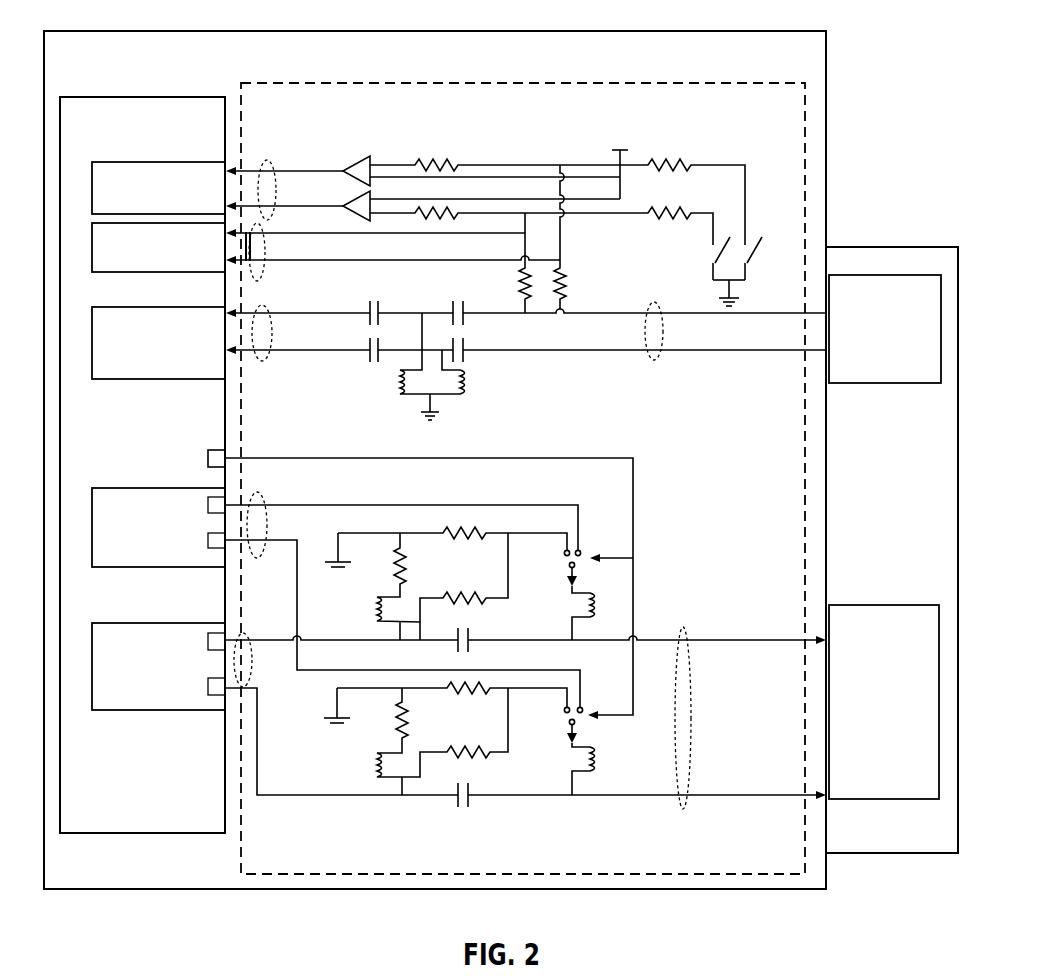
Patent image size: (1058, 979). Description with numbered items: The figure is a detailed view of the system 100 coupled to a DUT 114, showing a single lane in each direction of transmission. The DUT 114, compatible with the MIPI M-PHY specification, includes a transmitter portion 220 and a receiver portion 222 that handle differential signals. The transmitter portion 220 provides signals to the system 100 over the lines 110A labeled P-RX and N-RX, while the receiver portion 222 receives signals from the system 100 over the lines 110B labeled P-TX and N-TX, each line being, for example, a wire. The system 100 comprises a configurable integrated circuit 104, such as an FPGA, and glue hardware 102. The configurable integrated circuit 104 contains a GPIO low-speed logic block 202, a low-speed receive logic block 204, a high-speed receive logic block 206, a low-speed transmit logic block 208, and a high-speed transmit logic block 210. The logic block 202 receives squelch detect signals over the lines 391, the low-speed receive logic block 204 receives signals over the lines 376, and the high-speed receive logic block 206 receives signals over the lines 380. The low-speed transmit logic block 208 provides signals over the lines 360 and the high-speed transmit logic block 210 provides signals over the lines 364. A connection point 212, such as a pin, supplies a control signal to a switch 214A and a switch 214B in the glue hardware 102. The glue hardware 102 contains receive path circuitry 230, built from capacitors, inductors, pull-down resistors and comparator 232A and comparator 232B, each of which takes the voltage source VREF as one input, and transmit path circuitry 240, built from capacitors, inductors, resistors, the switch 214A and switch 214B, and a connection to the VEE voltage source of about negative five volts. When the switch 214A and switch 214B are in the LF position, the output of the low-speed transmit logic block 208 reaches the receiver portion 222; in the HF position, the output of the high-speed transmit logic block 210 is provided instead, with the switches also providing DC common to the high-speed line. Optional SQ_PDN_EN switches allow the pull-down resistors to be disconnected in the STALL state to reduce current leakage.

The system 100 is at (113, 30).
The glue hardware 102 is at (312, 82).
The configurable integrated circuit 104 is at (128, 96).
The lines 110A is at (654, 362).
The lines 110B is at (684, 627).
The DUT 114 is at (913, 840).
The general-purpose input/output logic block 202 is at (160, 161).
The low-speed receive logic block 204 is at (130, 273).
The high-speed receive logic block 206 is at (130, 380).
The low-speed transmit logic block 208 is at (158, 568).
The high-speed transmit logic block 210 is at (158, 711).
The connection point 212 is at (208, 455).
The switch 214A is at (594, 528).
The switch 214B is at (594, 695).
The transmitter portion 220 is at (905, 377).
The receiver portion 222 is at (905, 768).
The receive path circuitry 230 is at (723, 138).
The comparator 232A is at (362, 158).
The comparator 232B is at (360, 220).
The transmit path circuitry 240 is at (704, 436).
The lines 360 is at (254, 495).
The lines 364 is at (244, 632).
The lines 376 is at (245, 268).
The lines 380 is at (263, 361).
The lines 391 is at (268, 160).